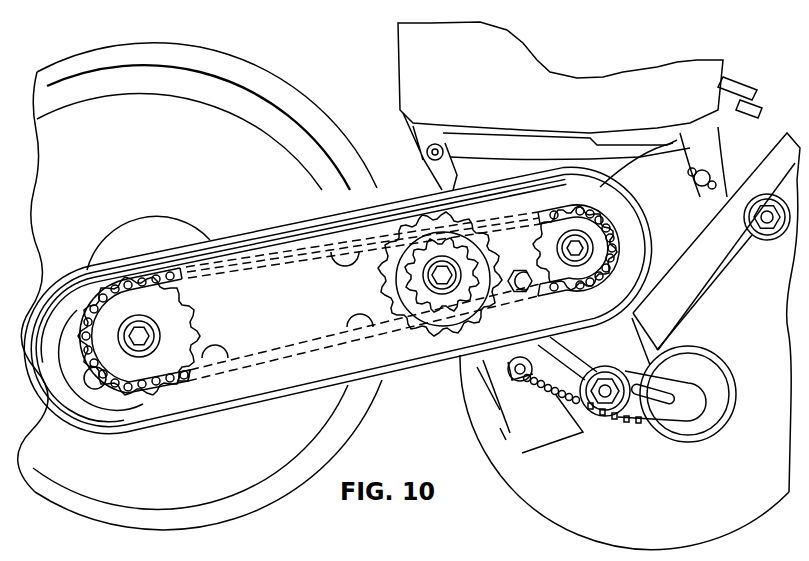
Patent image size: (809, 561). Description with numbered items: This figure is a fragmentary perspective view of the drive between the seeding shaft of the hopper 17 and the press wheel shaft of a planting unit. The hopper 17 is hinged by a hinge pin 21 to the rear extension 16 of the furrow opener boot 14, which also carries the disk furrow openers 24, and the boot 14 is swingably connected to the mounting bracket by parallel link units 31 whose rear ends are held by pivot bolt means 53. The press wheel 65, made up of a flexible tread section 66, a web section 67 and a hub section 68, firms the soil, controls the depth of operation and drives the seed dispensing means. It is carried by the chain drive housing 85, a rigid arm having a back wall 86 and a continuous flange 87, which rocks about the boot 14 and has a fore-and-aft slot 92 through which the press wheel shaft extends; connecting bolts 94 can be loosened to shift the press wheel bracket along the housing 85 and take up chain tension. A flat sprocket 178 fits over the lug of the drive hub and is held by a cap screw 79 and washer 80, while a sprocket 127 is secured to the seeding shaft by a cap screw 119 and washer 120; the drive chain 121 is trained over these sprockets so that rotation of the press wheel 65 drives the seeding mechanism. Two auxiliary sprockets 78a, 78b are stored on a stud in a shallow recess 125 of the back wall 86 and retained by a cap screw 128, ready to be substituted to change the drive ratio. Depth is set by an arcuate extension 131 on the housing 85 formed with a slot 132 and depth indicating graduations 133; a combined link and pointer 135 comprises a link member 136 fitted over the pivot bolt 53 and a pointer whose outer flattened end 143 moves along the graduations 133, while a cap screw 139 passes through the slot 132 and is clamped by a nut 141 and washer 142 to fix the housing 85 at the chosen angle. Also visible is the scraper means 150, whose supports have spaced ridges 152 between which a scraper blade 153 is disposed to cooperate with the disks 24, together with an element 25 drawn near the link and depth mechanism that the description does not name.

The furrow opener boot 14 is at (415, 175).
The rear extension 16 is at (791, 181).
The hopper 17 is at (405, 44).
The hinge pin 21 is at (441, 144).
The disk furrow openers 24 is at (752, 518).
The idler wheel 25 is at (712, 375).
The parallel link units 31 is at (781, 135).
The pivot bolt means 53 is at (767, 224).
The press wheel 65 is at (265, 55).
The tread section 66 is at (161, 47).
The web section 67 is at (263, 147).
The hub section 68 is at (145, 225).
The auxiliary sprocket 78a is at (392, 275).
The auxiliary sprocket 78b is at (428, 300).
The cap screw 79 is at (143, 347).
The washer 80 is at (145, 325).
The chain drive housing 85 is at (262, 226).
The back wall 86 is at (318, 389).
The continuous flange 87 is at (302, 232).
The slot 92 is at (196, 320).
The connecting bolts 94 is at (88, 371).
The cap screw 119 is at (582, 253).
The washer 120 is at (592, 210).
The drive chain 121 is at (222, 376).
The shallow recess 125 is at (378, 300).
The sprocket 127 is at (552, 212).
The cap screw 128 is at (448, 277).
The arcuate extension 131 is at (665, 343).
The slot 132 is at (663, 410).
The depth indicating graduations 133 is at (556, 389).
The combined link and pointer 135 is at (727, 277).
The link member 136 is at (700, 298).
The cap screw 139 is at (606, 398).
The nut 141 is at (620, 398).
The washer 142 is at (610, 373).
The outer flattened end 143 is at (573, 432).
The scraper means 150 is at (502, 427).
The ridges 152 is at (545, 330).
The scraper blade 153 is at (497, 412).
The sprocket 178 is at (155, 383).